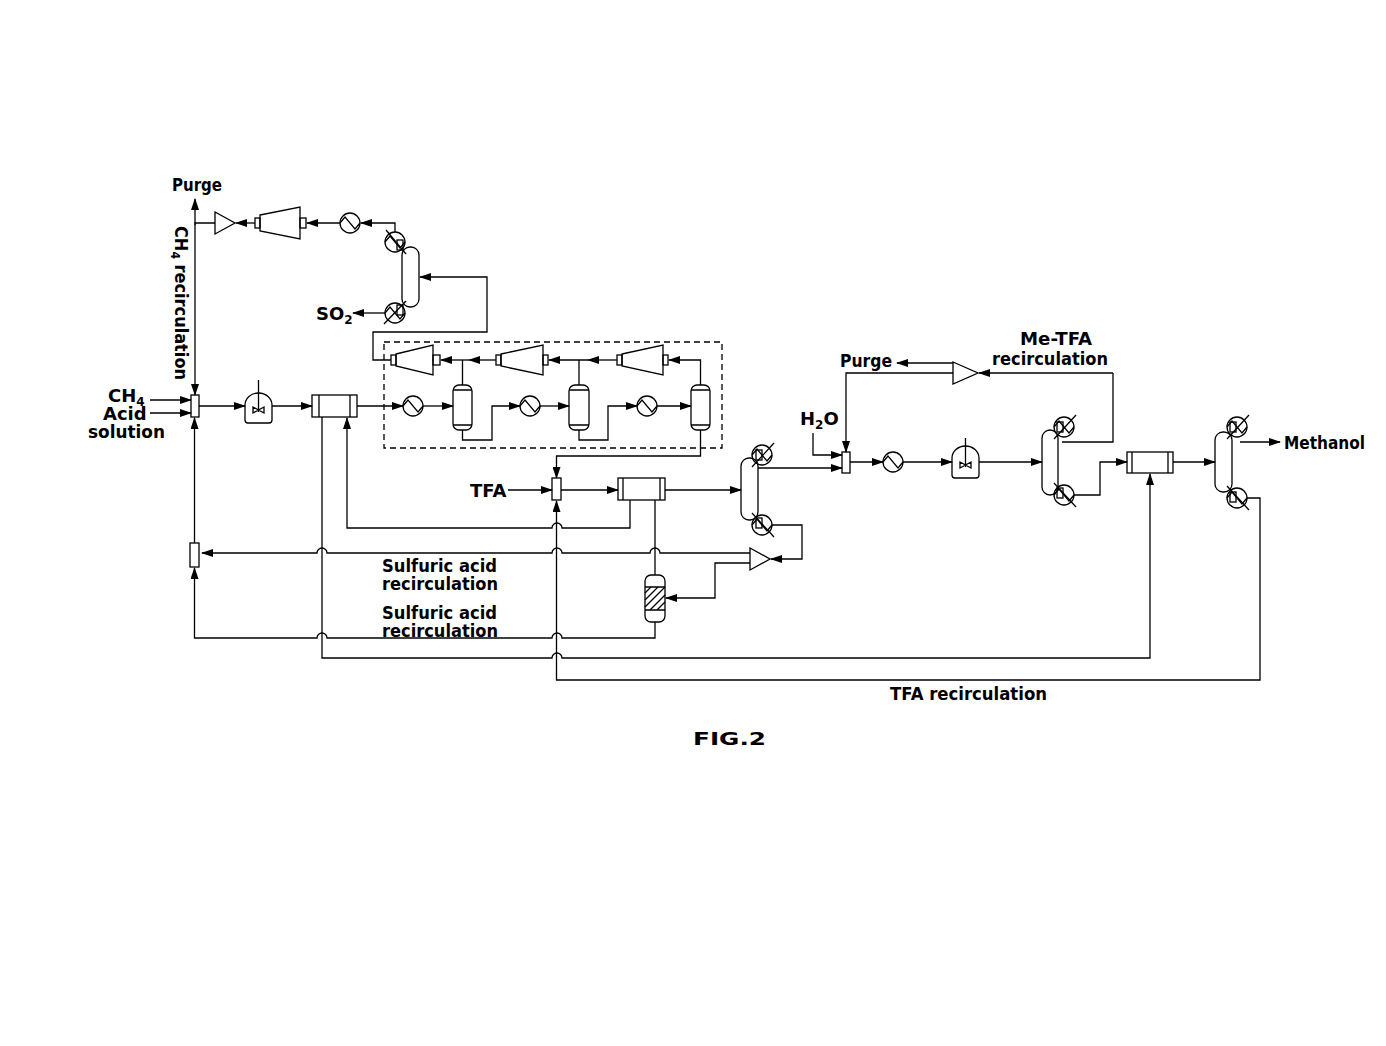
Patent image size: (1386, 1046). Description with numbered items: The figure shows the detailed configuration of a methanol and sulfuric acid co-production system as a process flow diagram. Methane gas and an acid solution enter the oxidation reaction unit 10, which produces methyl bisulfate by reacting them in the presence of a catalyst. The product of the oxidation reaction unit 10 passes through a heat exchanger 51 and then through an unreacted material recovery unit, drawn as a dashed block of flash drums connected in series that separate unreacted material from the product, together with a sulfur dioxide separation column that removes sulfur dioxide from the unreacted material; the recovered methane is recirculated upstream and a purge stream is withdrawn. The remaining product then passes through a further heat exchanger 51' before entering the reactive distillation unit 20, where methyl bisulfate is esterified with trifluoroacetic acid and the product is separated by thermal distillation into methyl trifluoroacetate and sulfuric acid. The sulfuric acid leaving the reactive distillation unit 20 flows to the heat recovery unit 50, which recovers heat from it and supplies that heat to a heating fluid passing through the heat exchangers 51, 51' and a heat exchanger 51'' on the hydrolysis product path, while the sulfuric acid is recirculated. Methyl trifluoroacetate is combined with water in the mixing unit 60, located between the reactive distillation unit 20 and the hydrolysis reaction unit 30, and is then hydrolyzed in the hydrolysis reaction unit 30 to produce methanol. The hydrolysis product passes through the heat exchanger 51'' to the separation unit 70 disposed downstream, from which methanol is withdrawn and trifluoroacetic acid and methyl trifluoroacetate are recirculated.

The oxidation reaction unit 10 is at (255, 391).
The heat exchanger 51 is at (326, 372).
The reactive distillation unit 20 is at (749, 445).
The heat exchanger 51' is at (680, 508).
The heat recovery unit 50 is at (674, 612).
The mixing unit 60 is at (948, 481).
The hydrolysis reaction unit 30 is at (1039, 494).
The heat exchanger 51'' is at (1150, 427).
The separation unit 70 is at (1228, 420).